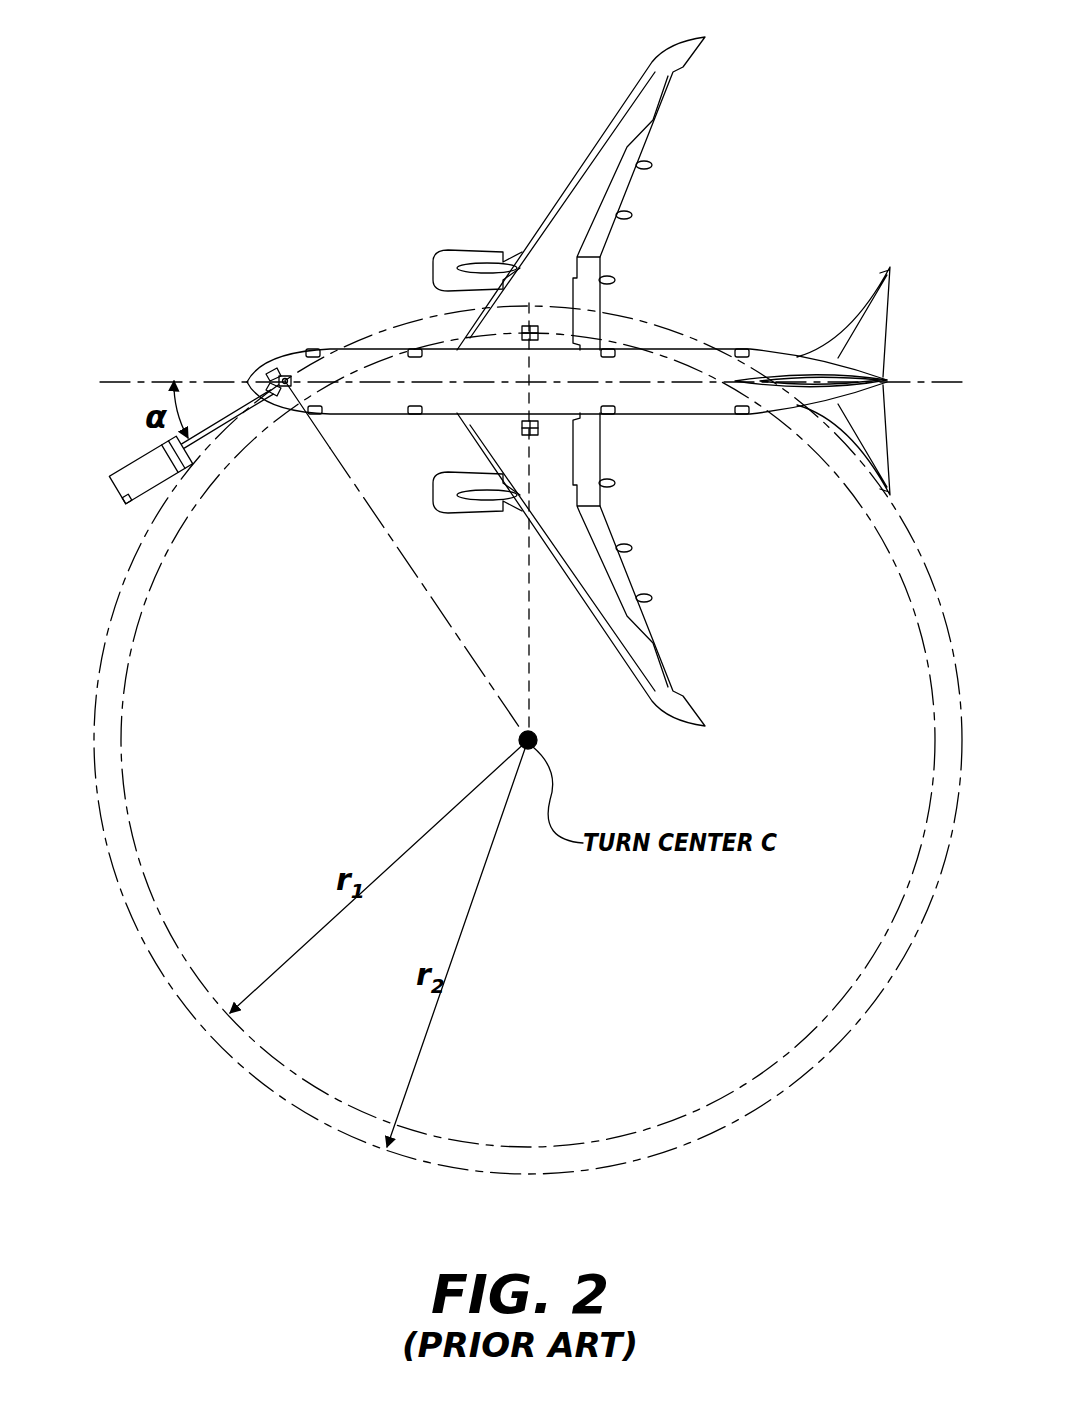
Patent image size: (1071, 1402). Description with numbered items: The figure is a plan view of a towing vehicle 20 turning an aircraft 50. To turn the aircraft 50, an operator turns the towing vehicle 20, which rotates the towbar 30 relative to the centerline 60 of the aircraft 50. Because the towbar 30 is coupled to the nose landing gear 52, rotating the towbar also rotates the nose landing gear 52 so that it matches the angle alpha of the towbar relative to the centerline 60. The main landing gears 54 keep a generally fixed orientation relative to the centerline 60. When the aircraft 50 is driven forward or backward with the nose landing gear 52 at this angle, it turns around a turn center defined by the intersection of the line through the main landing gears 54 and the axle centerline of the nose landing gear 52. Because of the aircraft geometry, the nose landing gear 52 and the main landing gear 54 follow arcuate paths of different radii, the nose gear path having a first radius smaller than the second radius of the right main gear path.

The towing vehicle 20 is at (140, 503).
The towbar 30 is at (200, 448).
The aircraft 50 is at (690, 420).
The nose landing gear 52 is at (286, 380).
The main landing gears 54 is at (540, 333).
The centerline 60 is at (122, 381).